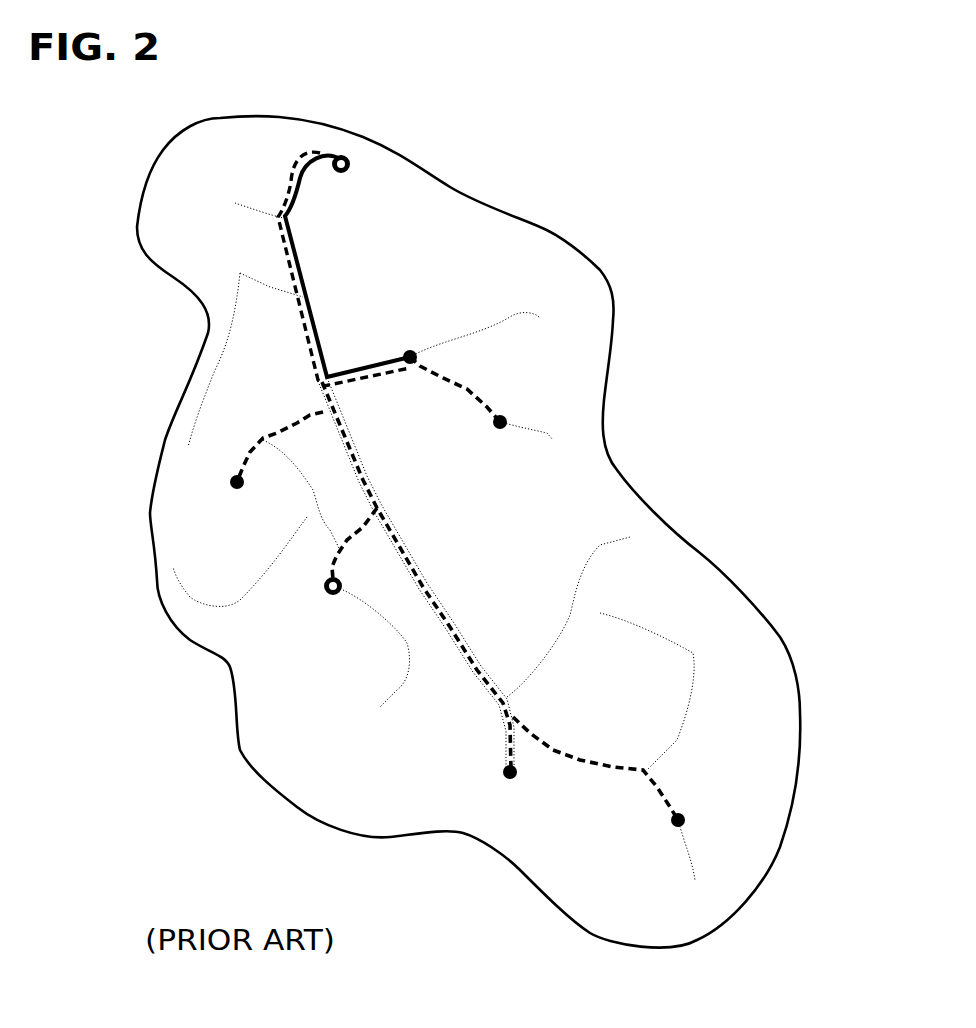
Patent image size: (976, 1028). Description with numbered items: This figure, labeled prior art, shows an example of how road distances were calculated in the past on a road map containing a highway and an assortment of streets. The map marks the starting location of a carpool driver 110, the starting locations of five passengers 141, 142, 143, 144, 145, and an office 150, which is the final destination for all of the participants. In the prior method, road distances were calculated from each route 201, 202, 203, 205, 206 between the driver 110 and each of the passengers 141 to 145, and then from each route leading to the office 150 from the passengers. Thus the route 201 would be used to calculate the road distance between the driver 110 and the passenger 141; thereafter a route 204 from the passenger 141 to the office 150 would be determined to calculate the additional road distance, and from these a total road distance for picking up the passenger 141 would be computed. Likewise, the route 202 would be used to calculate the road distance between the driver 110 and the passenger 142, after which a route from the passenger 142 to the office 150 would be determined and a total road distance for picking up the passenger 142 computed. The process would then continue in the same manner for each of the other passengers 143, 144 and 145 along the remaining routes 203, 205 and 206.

The carpool driver 110 is at (415, 208).
The passenger 141 is at (428, 337).
The passenger 142 is at (555, 466).
The passenger 143 is at (252, 543).
The passenger 144 is at (525, 833).
The passenger 145 is at (755, 843).
The office 150 is at (369, 627).
The route 201 is at (312, 268).
The route 202 is at (483, 382).
The route 203 is at (235, 455).
The route 204 is at (327, 558).
The route 205 is at (502, 738).
The route 206 is at (657, 803).